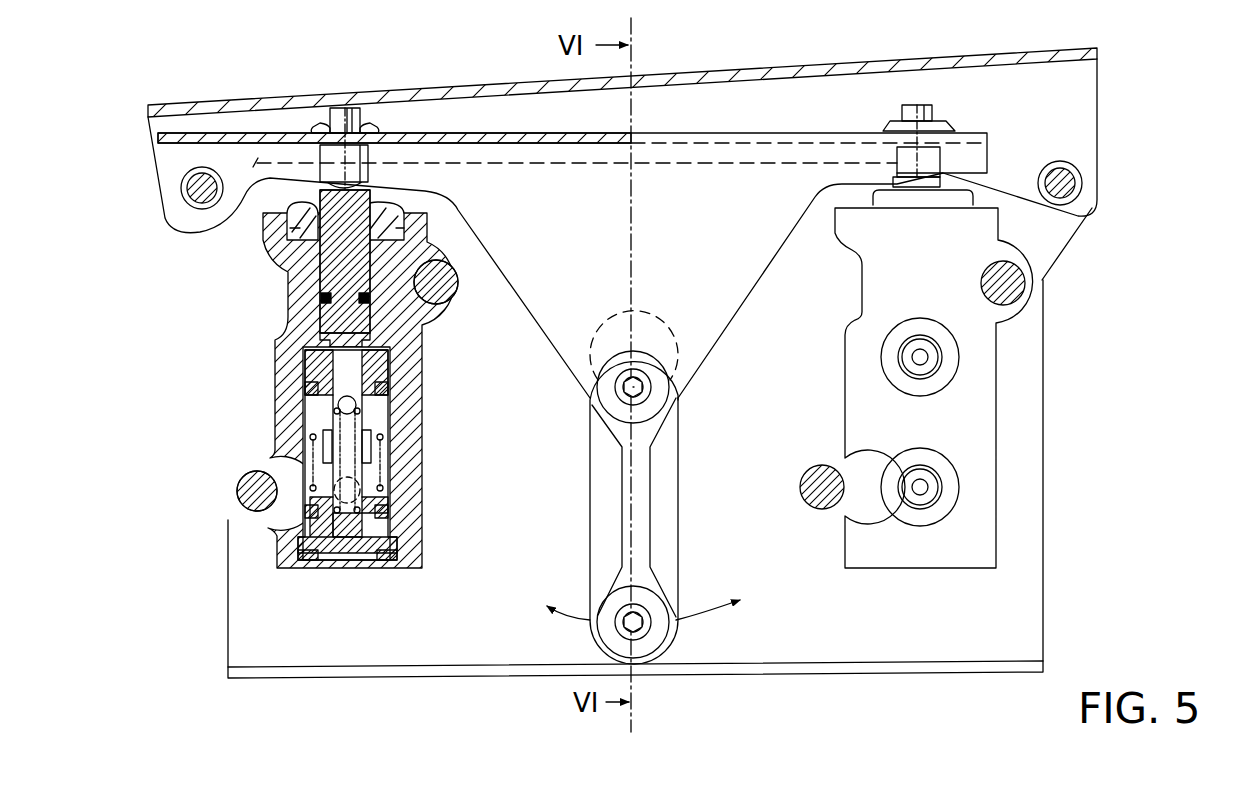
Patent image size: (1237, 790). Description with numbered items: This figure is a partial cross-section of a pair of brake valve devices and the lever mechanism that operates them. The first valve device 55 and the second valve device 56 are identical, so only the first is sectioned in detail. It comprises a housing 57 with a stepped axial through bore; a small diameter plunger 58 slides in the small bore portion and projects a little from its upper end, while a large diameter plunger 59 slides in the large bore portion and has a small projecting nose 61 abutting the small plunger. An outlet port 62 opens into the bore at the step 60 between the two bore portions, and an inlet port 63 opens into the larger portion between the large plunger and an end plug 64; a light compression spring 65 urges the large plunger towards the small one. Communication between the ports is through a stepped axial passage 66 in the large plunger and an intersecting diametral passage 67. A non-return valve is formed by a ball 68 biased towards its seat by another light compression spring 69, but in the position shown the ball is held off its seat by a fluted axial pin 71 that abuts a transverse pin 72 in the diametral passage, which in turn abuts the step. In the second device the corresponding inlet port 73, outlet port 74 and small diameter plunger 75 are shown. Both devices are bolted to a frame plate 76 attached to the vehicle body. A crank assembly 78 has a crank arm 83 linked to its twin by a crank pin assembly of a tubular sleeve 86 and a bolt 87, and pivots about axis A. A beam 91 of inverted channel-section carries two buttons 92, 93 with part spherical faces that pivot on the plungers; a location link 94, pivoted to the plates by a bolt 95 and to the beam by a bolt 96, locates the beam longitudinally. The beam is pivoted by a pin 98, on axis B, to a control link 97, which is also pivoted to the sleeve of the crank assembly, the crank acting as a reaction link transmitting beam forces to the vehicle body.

The first valve device 55 is at (342, 399).
The second valve device 56 is at (941, 388).
The housing 57 is at (283, 543).
The small diameter plunger 58 is at (328, 268).
The large diameter plunger 59 is at (383, 412).
The step 60 is at (318, 337).
The nose 61 is at (320, 342).
The outlet port 62 is at (392, 354).
The inlet port 63 is at (383, 477).
The end plug 64 is at (360, 540).
The light compression spring 65 is at (387, 495).
The stepped axial passage 66 is at (367, 440).
The diametral passage 67 is at (393, 366).
The ball 68 is at (337, 408).
The light compression spring 69 is at (338, 514).
The axial pin 71 is at (397, 393).
The transverse pin 72 is at (308, 357).
The inlet port 73 is at (925, 490).
The outlet port 74 is at (923, 358).
The small diameter plunger 75 is at (938, 190).
The plate 76 is at (1028, 626).
The crank assembly 78 is at (644, 507).
The crank arm 83 is at (667, 525).
The tubular sleeve 86 is at (620, 632).
The bolt 87 is at (647, 636).
The beam 91 is at (638, 301).
The button 92 is at (357, 153).
The button 93 is at (905, 188).
The location link 94 is at (816, 70).
The bolt 95 is at (1076, 201).
The bolt 96 is at (203, 208).
The control link 97 is at (622, 522).
The pin 98 is at (622, 378).
The pivot axis of the crank assembly A is at (679, 398).
The pivot axis of the control link on the beam B is at (622, 392).